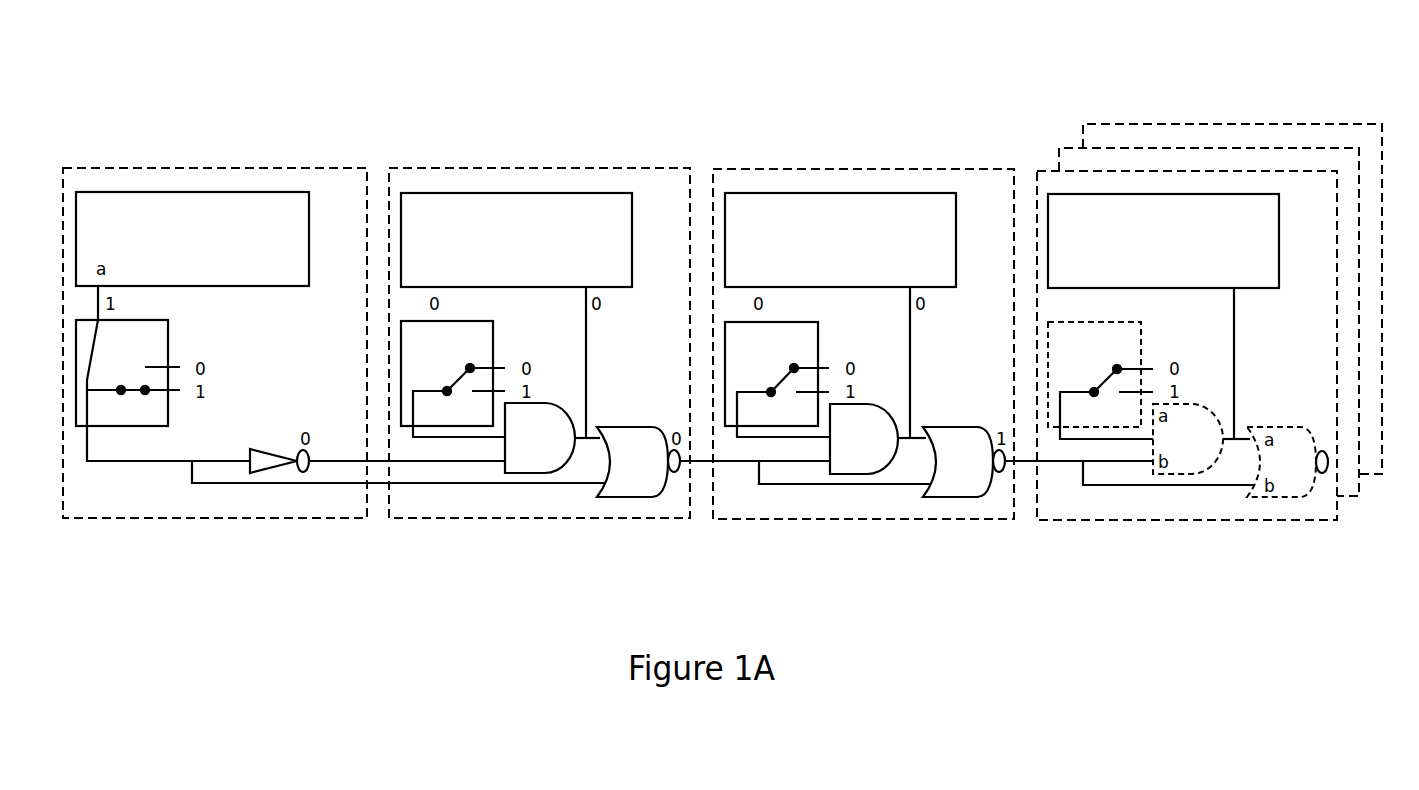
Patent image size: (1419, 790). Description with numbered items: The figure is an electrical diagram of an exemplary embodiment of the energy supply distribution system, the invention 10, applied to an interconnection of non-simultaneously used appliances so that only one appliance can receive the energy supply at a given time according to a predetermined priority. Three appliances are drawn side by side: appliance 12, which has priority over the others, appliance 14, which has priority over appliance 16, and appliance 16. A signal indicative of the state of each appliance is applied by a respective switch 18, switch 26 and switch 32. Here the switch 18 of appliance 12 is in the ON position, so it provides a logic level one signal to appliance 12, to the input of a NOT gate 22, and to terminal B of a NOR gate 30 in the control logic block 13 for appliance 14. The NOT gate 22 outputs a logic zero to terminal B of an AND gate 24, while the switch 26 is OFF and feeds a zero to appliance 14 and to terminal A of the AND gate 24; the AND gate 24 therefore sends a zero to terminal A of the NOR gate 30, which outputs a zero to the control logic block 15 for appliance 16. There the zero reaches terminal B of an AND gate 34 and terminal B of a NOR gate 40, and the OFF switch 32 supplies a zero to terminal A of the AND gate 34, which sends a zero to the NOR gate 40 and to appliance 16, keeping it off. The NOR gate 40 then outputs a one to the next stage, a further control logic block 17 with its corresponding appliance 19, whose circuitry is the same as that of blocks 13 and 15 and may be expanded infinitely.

The invention 10 is at (221, 157).
The appliance 12 is at (192, 239).
The control logic block 13 is at (557, 157).
The appliance 14 is at (516, 240).
The control logic block 15 is at (869, 153).
The appliance 16 is at (840, 240).
The control logic block 17 is at (1043, 160).
The switch 18 is at (128, 373).
The appliance 19 is at (1163, 241).
The NOT gate 22 is at (273, 447).
The AND gate 24 is at (540, 438).
The switch 26 is at (453, 373).
The NOR gate 30 is at (638, 462).
The switch 32 is at (777, 374).
The AND gate 34 is at (864, 439).
The NOR gate 40 is at (964, 462).